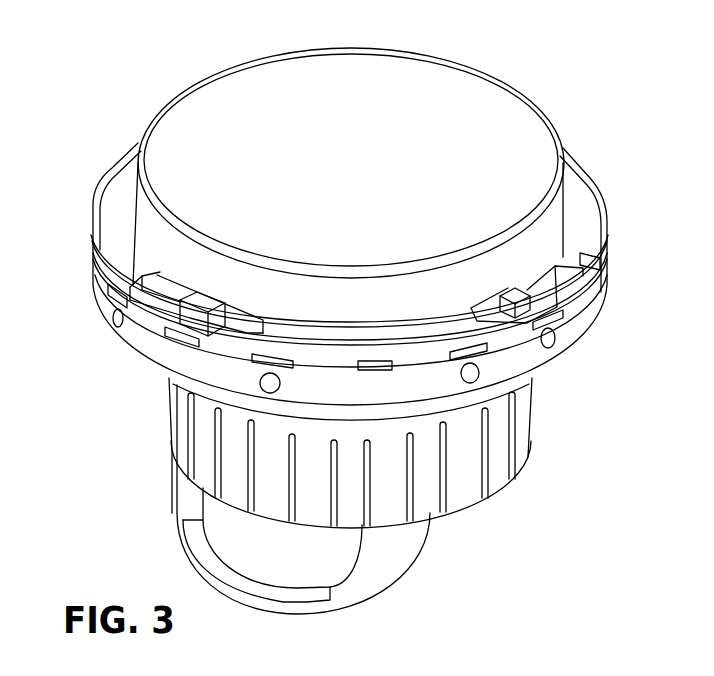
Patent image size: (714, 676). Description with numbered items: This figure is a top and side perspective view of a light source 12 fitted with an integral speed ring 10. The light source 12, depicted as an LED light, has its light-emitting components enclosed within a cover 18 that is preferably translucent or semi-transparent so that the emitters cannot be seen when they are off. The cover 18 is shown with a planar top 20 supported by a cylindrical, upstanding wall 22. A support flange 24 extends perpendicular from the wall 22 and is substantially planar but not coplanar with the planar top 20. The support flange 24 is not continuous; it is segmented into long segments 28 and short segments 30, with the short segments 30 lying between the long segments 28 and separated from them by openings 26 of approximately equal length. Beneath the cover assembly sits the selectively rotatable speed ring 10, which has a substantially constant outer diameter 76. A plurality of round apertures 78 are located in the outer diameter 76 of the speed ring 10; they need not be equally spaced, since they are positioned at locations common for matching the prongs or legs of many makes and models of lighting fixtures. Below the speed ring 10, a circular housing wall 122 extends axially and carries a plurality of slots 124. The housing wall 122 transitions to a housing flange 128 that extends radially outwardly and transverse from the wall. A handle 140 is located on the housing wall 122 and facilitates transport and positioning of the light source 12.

The speed ring 10 is at (165, 352).
The light source 12 is at (96, 194).
The cover 18 is at (497, 101).
The planar top 20 is at (532, 148).
The upstanding wall 22 is at (558, 208).
The support flange 24 is at (588, 219).
The openings 26 is at (243, 326).
The long segments 28 is at (124, 206).
The short segments 30 is at (203, 308).
The outer diameter 76 is at (595, 298).
The apertures 78 is at (112, 313).
The housing wall 122 is at (523, 433).
The slots 124 is at (499, 484).
The housing flange 128 is at (585, 338).
The handle 140 is at (381, 590).